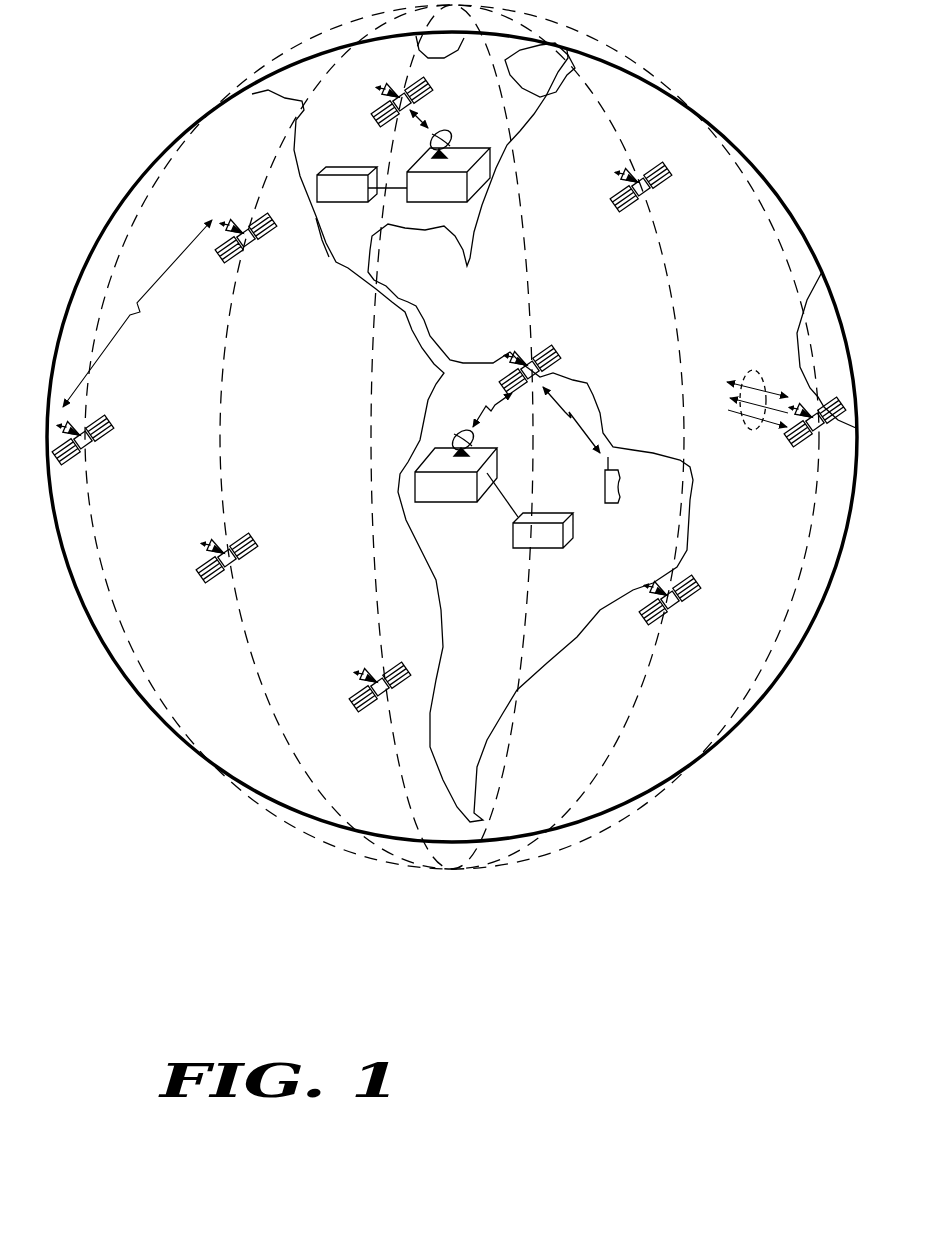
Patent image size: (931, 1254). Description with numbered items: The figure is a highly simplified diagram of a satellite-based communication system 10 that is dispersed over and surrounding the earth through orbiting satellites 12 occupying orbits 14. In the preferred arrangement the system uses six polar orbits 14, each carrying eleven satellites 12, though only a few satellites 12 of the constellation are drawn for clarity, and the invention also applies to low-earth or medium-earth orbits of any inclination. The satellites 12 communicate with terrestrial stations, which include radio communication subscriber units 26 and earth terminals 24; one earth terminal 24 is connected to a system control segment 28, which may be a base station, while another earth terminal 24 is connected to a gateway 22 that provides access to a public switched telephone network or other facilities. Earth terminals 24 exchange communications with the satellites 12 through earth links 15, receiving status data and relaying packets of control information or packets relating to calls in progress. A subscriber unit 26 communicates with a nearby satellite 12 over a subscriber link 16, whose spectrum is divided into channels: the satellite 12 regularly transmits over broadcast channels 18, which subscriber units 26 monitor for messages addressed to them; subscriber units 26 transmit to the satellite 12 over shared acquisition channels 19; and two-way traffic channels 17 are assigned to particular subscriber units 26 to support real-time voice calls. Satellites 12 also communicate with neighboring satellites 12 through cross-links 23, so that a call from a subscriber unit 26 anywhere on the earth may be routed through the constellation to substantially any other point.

The satellite-based communication system 10 is at (445, 962).
The satellite 12 is at (381, 126).
The orbit 14 is at (269, 158).
The earth link 15 is at (487, 407).
The subscriber link 16 is at (572, 400).
The traffic channel 17 is at (748, 378).
The broadcast channel 18 is at (730, 397).
The acquisition channel 19 is at (738, 428).
The gateway 22 is at (550, 550).
The cross-link 23 is at (148, 302).
The earth terminal 24 is at (472, 148).
The subscriber unit 26 is at (610, 503).
The system control segment 28 is at (330, 203).